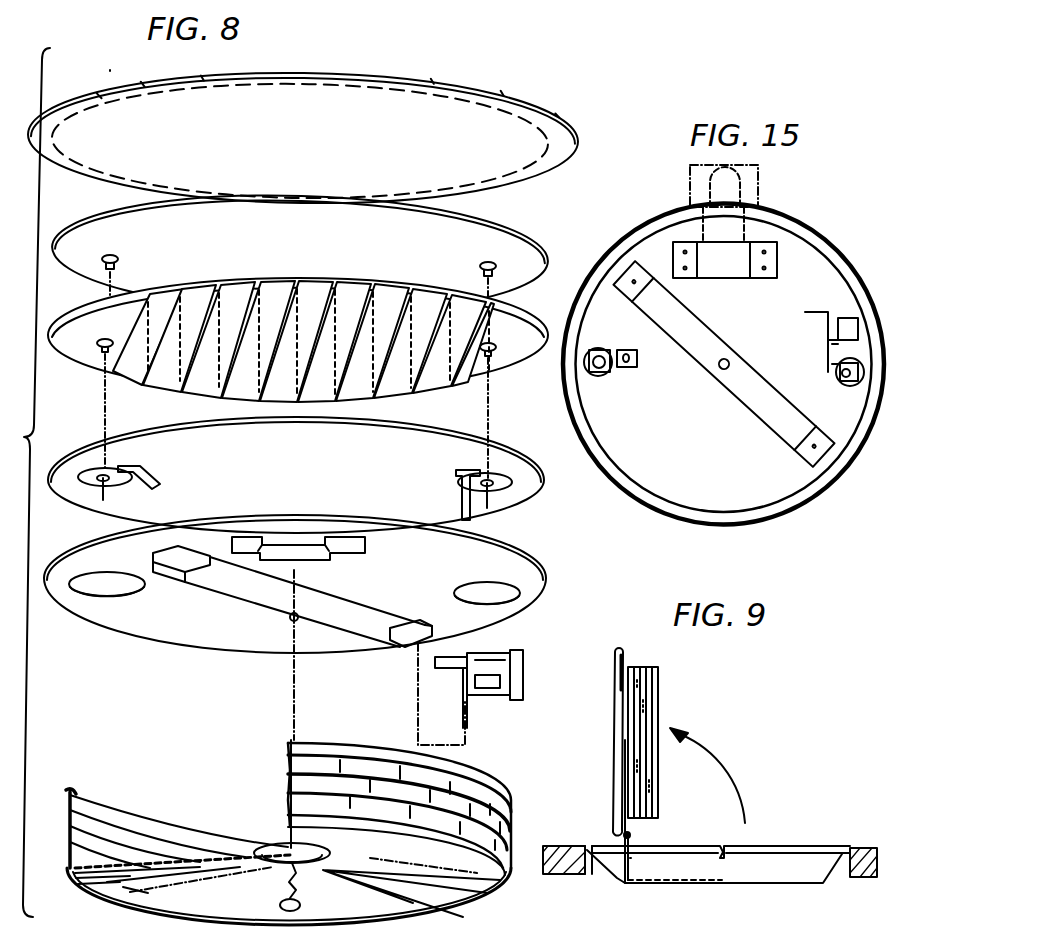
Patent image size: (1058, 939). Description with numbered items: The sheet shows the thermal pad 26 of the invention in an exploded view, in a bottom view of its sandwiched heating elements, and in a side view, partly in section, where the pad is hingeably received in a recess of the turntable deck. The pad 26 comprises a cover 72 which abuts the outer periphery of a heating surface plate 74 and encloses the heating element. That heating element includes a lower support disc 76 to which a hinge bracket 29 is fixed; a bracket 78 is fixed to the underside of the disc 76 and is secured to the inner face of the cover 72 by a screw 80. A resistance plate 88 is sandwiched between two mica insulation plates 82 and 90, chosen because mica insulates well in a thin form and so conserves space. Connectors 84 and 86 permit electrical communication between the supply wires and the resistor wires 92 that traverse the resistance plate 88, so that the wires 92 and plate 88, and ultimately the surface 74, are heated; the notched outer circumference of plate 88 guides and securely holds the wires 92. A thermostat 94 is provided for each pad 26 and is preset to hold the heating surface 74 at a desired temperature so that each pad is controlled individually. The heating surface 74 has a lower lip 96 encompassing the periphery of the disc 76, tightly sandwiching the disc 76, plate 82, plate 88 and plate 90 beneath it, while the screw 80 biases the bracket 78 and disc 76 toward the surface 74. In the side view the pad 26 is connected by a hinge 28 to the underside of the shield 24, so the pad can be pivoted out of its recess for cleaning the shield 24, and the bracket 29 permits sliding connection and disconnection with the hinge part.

In FIG. 9, the shield 24 is at (672, 884).
In FIG. 8, the thermal pad 26 is at (356, 62).
In FIG. 9, the thermal pad 26 is at (650, 688).
In FIG. 9, the hinge 28 is at (645, 862).
In FIG. 8, the bracket 29 is at (342, 550).
In FIG. 8, the cover 72 is at (460, 776).
In FIG. 8, the heating surface plate 74 is at (548, 116).
In FIG. 8, the lower support disc 76 is at (496, 565).
In FIG. 8, the bracket 78 is at (256, 603).
In FIG. 8, the screw 80 is at (300, 906).
In FIG. 8, the insulation plate 82 is at (497, 450).
In FIG. 8, the connector 84 is at (156, 480).
In FIG. 8, the connector 86 is at (456, 497).
In FIG. 8, the resistance plate 88 is at (90, 355).
In FIG. 8, the insulation plate 90 is at (512, 231).
In FIG. 8, the resistor wires 92 is at (430, 380).
In FIG. 8, the thermostat 94 is at (526, 664).
In FIG. 15, the thermostat 94 is at (843, 318).
In FIG. 8, the lower lip 96 is at (548, 158).
In FIG. 15, the lower lip 96 is at (770, 221).